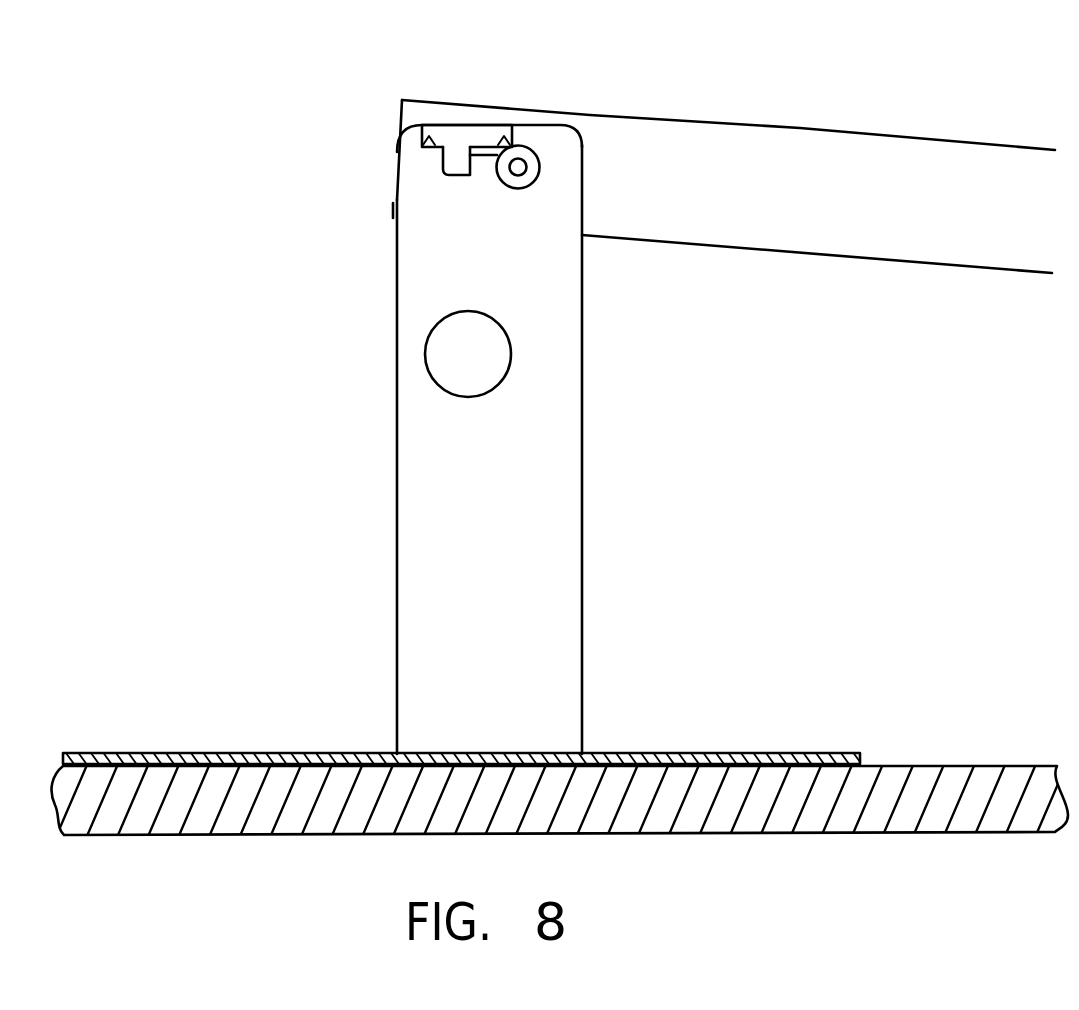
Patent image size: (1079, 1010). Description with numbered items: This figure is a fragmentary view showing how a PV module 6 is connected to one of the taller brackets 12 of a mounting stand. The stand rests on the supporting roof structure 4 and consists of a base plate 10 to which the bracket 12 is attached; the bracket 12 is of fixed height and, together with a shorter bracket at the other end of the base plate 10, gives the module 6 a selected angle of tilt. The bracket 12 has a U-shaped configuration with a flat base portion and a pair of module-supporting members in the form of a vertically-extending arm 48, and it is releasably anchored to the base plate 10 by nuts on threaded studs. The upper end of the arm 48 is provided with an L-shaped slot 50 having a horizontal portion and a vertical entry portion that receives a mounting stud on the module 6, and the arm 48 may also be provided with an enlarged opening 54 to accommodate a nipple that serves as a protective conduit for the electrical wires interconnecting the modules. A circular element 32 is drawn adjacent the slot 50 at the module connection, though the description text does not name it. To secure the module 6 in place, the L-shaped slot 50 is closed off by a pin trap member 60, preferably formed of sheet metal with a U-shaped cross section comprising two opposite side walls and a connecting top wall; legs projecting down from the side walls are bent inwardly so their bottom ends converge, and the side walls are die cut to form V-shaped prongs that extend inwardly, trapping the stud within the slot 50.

The supporting roof structure 4 is at (928, 766).
The PV module 6 is at (852, 256).
The base plate 10 is at (698, 752).
The bracket 12 is at (397, 544).
The roller 32 is at (543, 157).
The vertically-extending arm 48 is at (437, 270).
The L-shaped slot 50 is at (487, 165).
The enlarged opening 54 is at (492, 386).
The pin trap member 60 is at (458, 124).